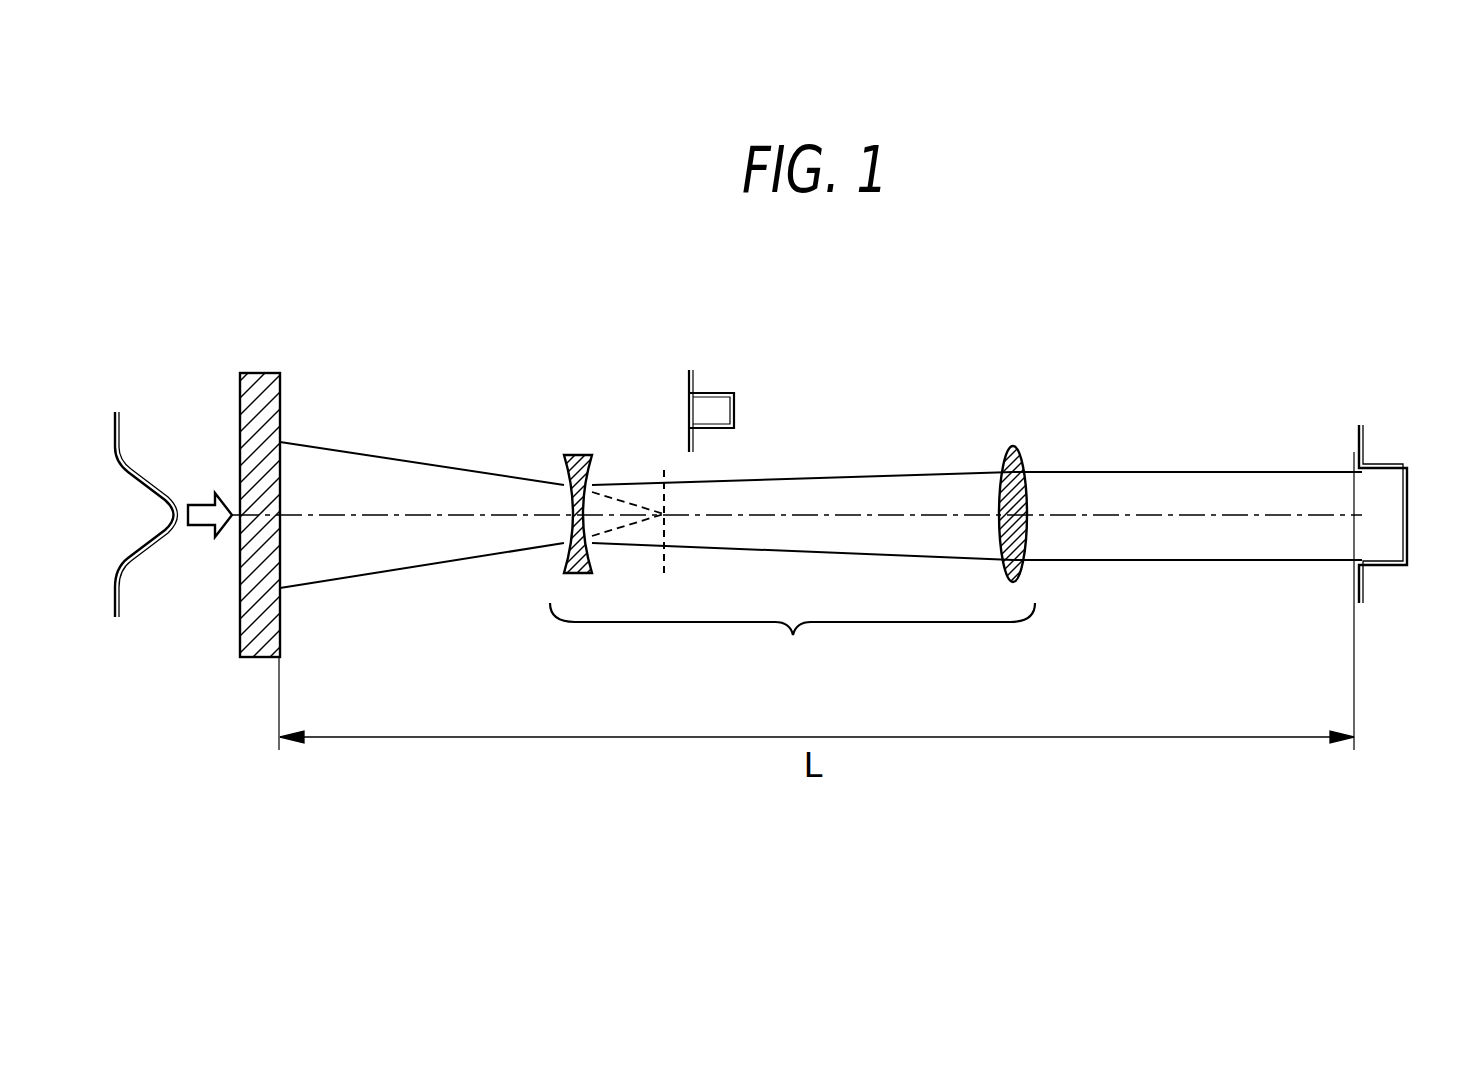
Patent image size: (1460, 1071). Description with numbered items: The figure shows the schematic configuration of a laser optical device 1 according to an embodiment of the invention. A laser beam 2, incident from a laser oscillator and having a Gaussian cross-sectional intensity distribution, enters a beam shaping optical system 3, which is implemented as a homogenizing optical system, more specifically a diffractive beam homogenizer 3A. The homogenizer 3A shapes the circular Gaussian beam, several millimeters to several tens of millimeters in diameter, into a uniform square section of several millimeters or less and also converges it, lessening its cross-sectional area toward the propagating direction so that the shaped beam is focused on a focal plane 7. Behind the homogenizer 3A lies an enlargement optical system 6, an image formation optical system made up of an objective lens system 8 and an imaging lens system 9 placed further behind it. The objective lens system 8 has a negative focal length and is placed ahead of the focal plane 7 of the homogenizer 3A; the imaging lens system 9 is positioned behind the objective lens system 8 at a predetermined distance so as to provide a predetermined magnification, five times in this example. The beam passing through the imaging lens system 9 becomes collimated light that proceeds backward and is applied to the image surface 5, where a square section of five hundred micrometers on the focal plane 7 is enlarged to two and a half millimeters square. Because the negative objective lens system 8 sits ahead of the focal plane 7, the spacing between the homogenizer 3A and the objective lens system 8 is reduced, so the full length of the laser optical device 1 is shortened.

The laser optical device 1 is at (862, 378).
The laser beam 2 is at (143, 476).
The beam shaping optical system 3 is at (277, 481).
The diffractive beam homogenizer 3A is at (257, 373).
The image surface 5 is at (1354, 640).
The enlargement optical system 6 is at (792, 640).
The focal plane 7 is at (664, 470).
The objective lens system 8 is at (577, 455).
The imaging lens system 9 is at (1013, 447).